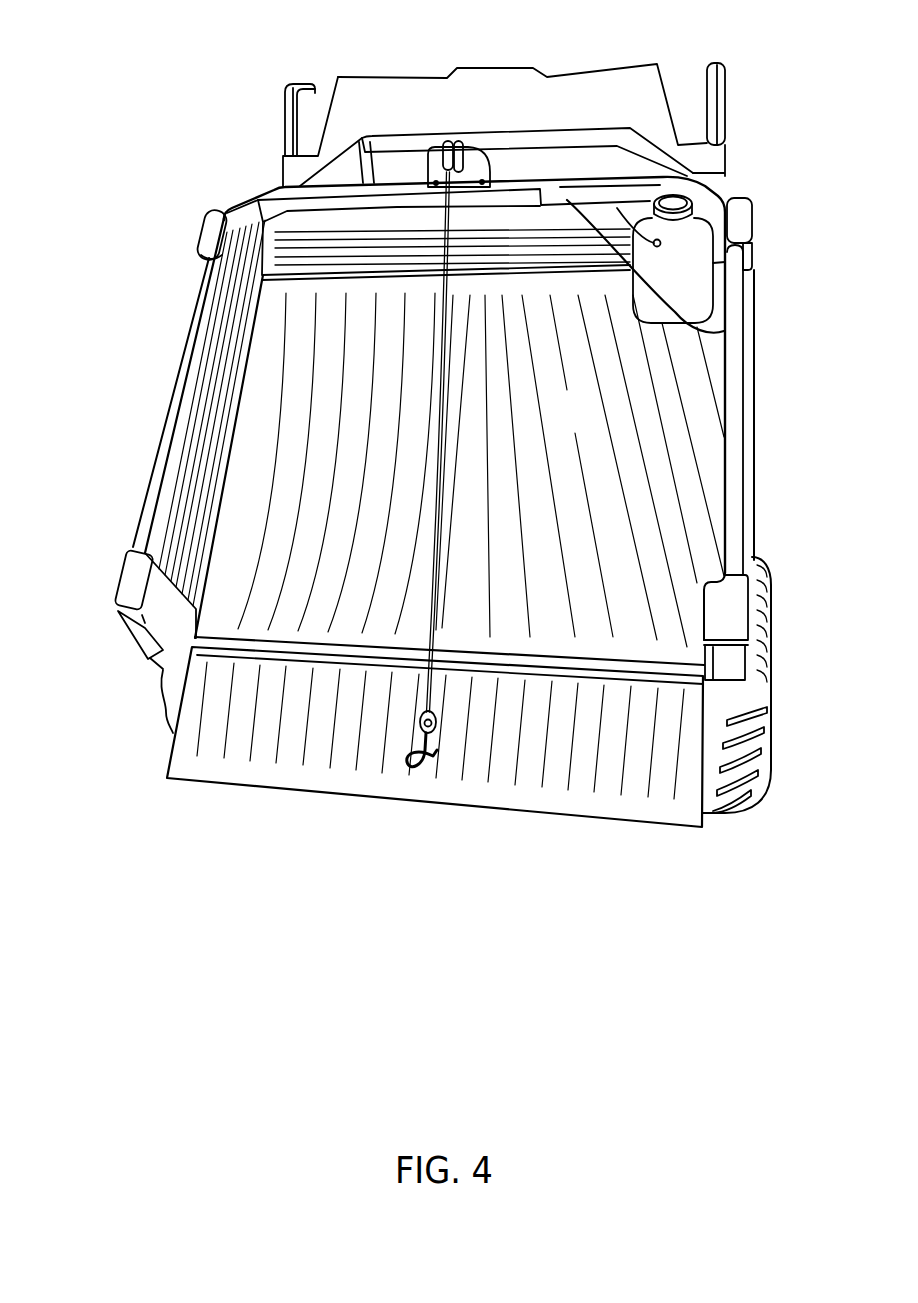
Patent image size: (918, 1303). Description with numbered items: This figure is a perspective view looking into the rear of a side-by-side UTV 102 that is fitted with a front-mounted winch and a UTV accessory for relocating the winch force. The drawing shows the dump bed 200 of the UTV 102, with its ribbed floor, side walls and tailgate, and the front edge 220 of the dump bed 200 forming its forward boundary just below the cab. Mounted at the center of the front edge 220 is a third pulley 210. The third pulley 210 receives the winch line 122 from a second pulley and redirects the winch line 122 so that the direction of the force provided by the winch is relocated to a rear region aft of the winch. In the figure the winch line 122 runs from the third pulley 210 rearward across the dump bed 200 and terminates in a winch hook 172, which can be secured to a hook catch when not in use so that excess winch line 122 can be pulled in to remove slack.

The side-by-side UTV 102 is at (216, 157).
The winch line 122 is at (430, 677).
The winch hook 172 is at (423, 767).
The dump bed 200 is at (592, 422).
The third pulley 210 is at (463, 153).
The front edge 220 is at (553, 182).